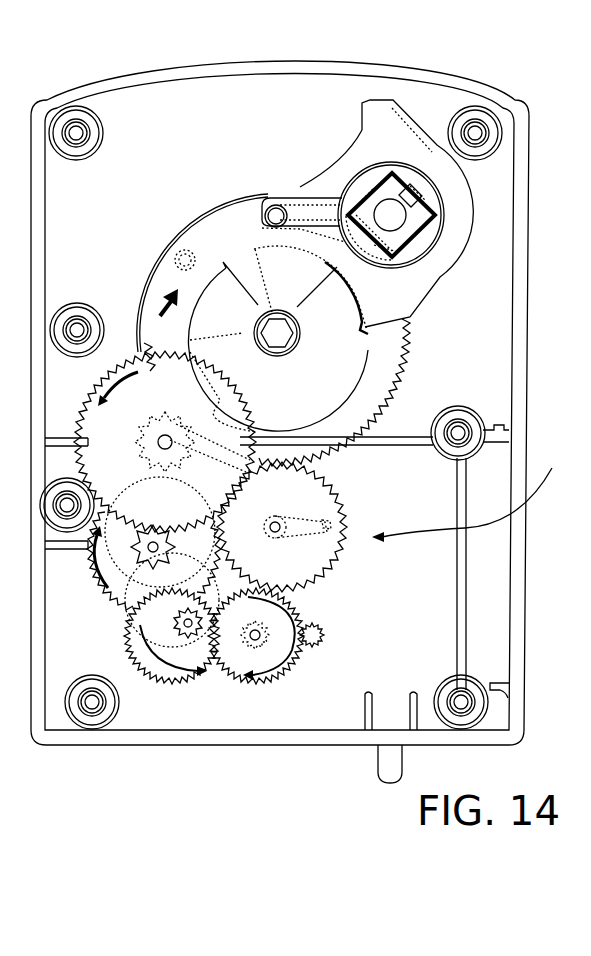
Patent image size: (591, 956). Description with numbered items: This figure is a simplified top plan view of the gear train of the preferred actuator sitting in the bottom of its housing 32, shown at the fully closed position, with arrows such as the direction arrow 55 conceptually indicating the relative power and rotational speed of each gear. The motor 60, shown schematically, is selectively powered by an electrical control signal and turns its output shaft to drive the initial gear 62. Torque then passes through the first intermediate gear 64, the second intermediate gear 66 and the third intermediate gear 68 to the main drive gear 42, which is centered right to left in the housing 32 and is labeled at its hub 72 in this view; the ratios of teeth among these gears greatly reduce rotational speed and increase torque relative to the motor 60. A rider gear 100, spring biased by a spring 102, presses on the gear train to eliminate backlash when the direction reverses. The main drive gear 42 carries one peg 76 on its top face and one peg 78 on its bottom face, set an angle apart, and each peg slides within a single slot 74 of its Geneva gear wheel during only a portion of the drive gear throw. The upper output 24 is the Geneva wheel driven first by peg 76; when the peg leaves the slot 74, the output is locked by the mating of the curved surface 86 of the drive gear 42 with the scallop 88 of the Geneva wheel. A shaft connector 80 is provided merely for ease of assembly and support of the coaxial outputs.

The upper output 24 is at (402, 133).
The actuator housing 32 is at (517, 260).
The main drive gear 42 is at (240, 223).
The rotation direction arrow 55 is at (469, 492).
The motor 60 is at (318, 640).
The initial gear 62 is at (264, 664).
The first intermediate gear 64 is at (172, 660).
The second intermediate gear 66 is at (125, 587).
The third intermediate gear 68 is at (86, 440).
The output gear 72 is at (265, 333).
The slot 74 is at (302, 200).
The peg 76 is at (276, 205).
The peg 78 is at (183, 250).
The shaft connector 80 is at (420, 217).
The curved surface 86 is at (215, 272).
The scallop 88 is at (344, 158).
The rider gear 100 is at (317, 517).
The spring 102 is at (328, 530).